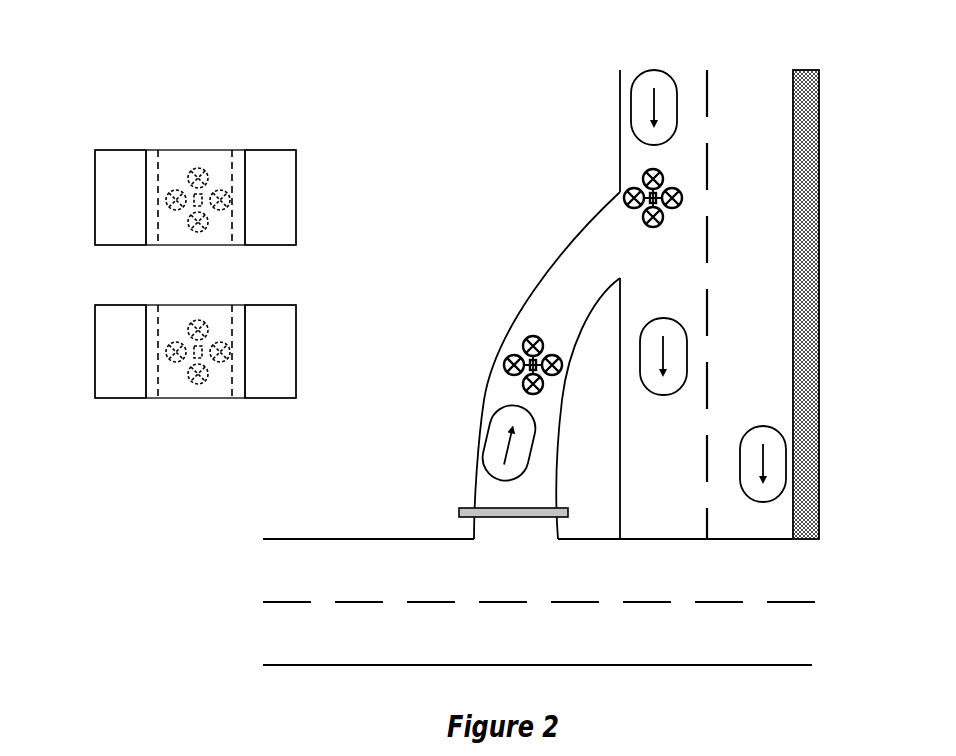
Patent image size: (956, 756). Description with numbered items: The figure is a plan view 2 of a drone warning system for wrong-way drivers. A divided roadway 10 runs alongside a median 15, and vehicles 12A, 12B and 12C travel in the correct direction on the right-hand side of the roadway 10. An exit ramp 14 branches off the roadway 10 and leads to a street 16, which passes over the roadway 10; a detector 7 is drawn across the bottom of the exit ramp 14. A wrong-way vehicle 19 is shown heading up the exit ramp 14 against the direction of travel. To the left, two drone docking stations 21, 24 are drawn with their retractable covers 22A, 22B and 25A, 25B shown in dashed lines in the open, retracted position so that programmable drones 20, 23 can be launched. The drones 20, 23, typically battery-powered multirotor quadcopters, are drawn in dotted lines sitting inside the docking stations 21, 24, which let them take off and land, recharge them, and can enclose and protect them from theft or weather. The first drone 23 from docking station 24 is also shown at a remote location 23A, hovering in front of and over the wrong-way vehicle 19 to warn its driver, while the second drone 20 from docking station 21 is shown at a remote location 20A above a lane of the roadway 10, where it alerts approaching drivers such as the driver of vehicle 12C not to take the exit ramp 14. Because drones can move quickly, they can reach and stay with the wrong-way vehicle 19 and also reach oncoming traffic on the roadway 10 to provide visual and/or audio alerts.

The plan view 2 is at (105, 40).
The drone docking station 21 is at (95, 196).
The retractable cover 22A is at (120, 197).
The retractable cover 22B is at (270, 197).
The drone 20 is at (198, 170).
The drone docking station 24 is at (95, 351).
The retractable cover 25A is at (120, 351).
The retractable cover 25B is at (270, 351).
The drone 23 is at (198, 323).
The roadway 10 is at (528, 304).
The median 15 is at (806, 70).
The exit ramp 14 is at (547, 365).
The detector 7 is at (459, 513).
The wrong-way vehicle 19 is at (485, 448).
The vehicle 12C is at (653, 70).
The vehicle 12B is at (663, 318).
The vehicle 12A is at (763, 426).
The remote location of second drone 20A is at (643, 184).
The remote location of first drone 23A is at (515, 356).
The street 16 is at (539, 633).